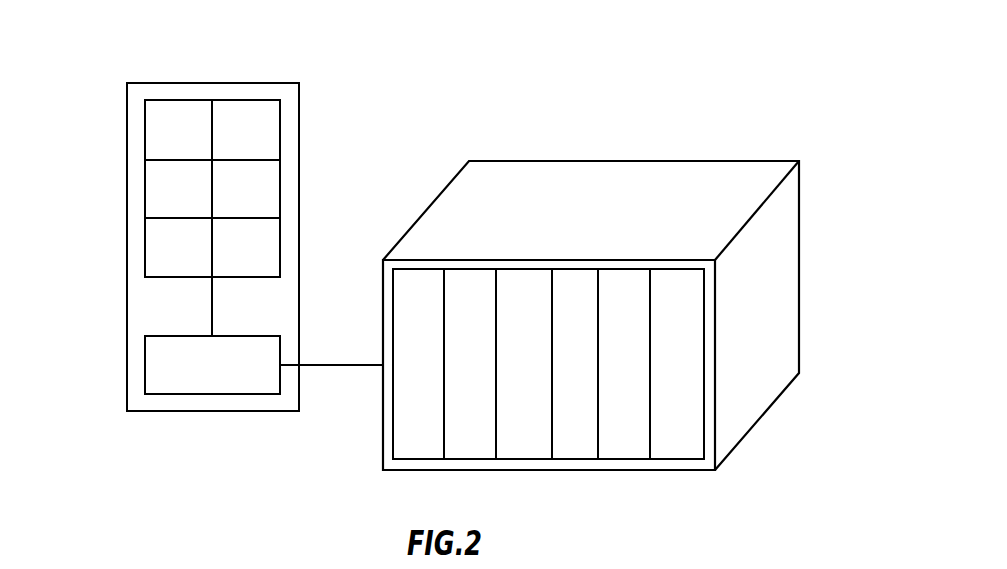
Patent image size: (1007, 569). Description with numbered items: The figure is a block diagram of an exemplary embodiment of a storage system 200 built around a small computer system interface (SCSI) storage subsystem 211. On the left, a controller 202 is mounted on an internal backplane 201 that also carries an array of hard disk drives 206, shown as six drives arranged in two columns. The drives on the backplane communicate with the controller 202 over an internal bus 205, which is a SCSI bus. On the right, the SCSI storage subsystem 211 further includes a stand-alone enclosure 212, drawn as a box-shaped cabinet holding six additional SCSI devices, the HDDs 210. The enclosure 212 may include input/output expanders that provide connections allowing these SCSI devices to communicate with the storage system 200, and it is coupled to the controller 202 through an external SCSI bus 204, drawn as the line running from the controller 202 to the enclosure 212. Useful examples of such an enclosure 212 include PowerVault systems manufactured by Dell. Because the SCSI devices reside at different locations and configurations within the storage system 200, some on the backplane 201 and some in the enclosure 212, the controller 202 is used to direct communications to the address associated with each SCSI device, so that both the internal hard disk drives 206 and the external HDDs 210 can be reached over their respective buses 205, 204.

The storage system 200 is at (627, 235).
The internal backplane 201 is at (132, 80).
The controller 202 is at (230, 379).
The SCSI bus 204 is at (313, 364).
The internal bus 205 is at (212, 287).
The hard disk drives 206 is at (198, 146).
The HDDs 210 is at (438, 372).
The SCSI storage subsystem 211 is at (791, 145).
The stand-alone enclosure 212 is at (696, 159).